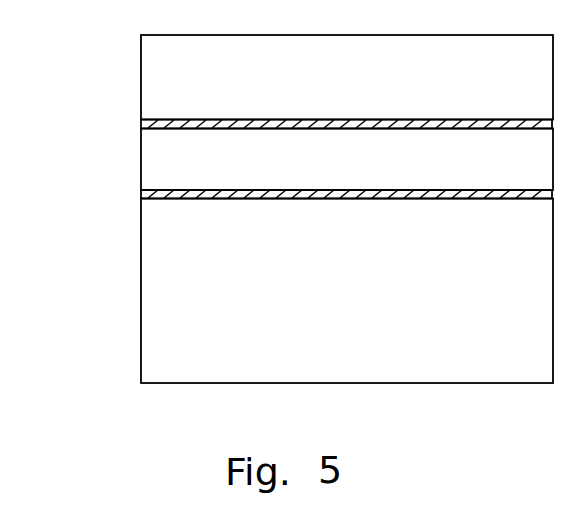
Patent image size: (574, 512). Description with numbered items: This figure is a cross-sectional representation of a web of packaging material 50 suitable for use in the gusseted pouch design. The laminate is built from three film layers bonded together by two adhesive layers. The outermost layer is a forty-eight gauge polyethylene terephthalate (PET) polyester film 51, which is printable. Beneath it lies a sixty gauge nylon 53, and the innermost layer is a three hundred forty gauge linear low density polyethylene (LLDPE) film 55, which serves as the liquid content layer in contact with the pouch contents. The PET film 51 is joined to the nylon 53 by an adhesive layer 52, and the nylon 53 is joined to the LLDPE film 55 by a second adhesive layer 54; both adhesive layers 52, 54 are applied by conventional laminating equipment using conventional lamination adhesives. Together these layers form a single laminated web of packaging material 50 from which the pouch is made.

The web of packaging material 50 is at (286, 209).
The polyethylene terephthalate (PET) polyester film 51 is at (206, 103).
The adhesive layer 52 is at (142, 126).
The nylon 53 is at (209, 182).
The adhesive layer 54 is at (142, 197).
The linear low density polyethylene (LLDPE) film 55 is at (232, 287).